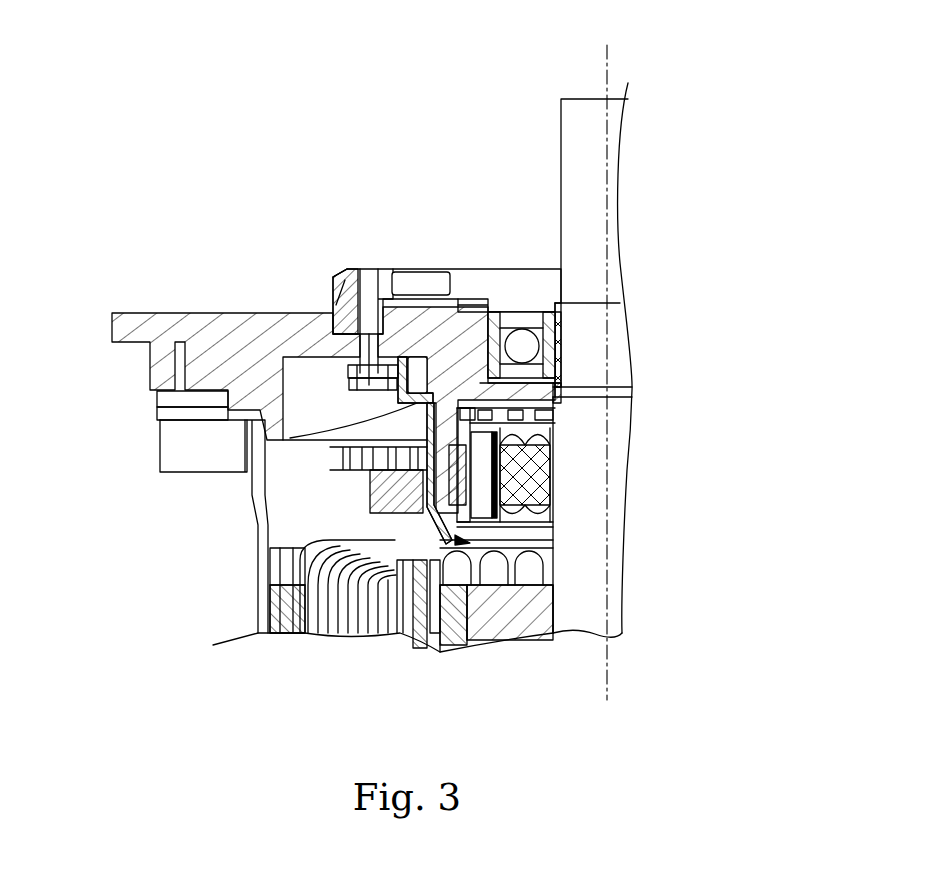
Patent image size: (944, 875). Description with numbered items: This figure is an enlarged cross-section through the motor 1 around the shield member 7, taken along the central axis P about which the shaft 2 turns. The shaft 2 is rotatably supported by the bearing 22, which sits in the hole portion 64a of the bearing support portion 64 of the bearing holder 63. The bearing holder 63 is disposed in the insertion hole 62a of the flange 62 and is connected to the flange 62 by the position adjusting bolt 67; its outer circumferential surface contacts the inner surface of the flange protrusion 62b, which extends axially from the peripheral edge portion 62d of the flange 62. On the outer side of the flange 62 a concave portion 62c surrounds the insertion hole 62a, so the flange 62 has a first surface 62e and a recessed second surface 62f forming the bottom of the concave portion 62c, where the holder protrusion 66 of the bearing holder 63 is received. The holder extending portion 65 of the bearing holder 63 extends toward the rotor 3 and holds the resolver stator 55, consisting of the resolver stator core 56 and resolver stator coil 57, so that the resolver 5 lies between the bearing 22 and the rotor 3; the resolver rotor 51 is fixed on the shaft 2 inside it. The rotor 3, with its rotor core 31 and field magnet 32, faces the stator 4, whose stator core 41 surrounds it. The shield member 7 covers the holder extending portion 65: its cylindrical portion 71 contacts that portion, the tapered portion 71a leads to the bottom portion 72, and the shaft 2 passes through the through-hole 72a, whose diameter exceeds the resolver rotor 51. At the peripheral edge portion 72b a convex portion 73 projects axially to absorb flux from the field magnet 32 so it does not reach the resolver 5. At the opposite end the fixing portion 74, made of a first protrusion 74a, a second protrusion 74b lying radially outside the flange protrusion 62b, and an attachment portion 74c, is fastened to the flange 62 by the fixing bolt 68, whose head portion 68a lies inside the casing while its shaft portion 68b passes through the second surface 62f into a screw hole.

The motor 1 is at (730, 86).
The central axis P is at (612, 75).
The shaft 2 is at (619, 360).
The bearing 22 is at (562, 305).
The rotor 3 is at (533, 636).
The rotor core 31 is at (545, 612).
The field magnet 32 is at (457, 645).
The stator 4 is at (285, 572).
The stator core 41 is at (300, 610).
The resolver 5 is at (583, 460).
The resolver rotor 51 is at (543, 496).
The resolver stator 55 is at (556, 428).
The resolver stator core 56 is at (556, 455).
The resolver stator coil 57 is at (550, 487).
The shield member 7 is at (284, 566).
The cylindrical portion 71 is at (335, 459).
The tapered portion 71a is at (365, 575).
The bottom portion 72 is at (426, 650).
The through-hole 72a is at (548, 606).
The peripheral edge portion 72b is at (486, 546).
The convex portion 73 is at (486, 600).
The flange 62 is at (420, 331).
The insertion hole 62a is at (455, 340).
The flange protrusion 62b is at (485, 375).
The concave portion 62c is at (335, 300).
The peripheral edge portion 62d is at (485, 352).
The first surface 62e is at (247, 313).
The second surface 62f is at (340, 292).
The bearing holder 63 is at (447, 244).
The bearing support portion 64 is at (485, 327).
The hole portion 64a is at (510, 305).
The holder extending portion 65 is at (397, 578).
The holder protrusion 66 is at (404, 300).
The position adjusting bolt 67 is at (435, 289).
The fixing bolt 68 is at (352, 252).
The head portion 68a is at (367, 297).
The shaft portion 68b is at (379, 297).
The fixing portion 74 is at (222, 408).
The first protrusion 74a is at (340, 431).
The second protrusion 74b is at (433, 400).
The attachment portion 74c is at (333, 357).